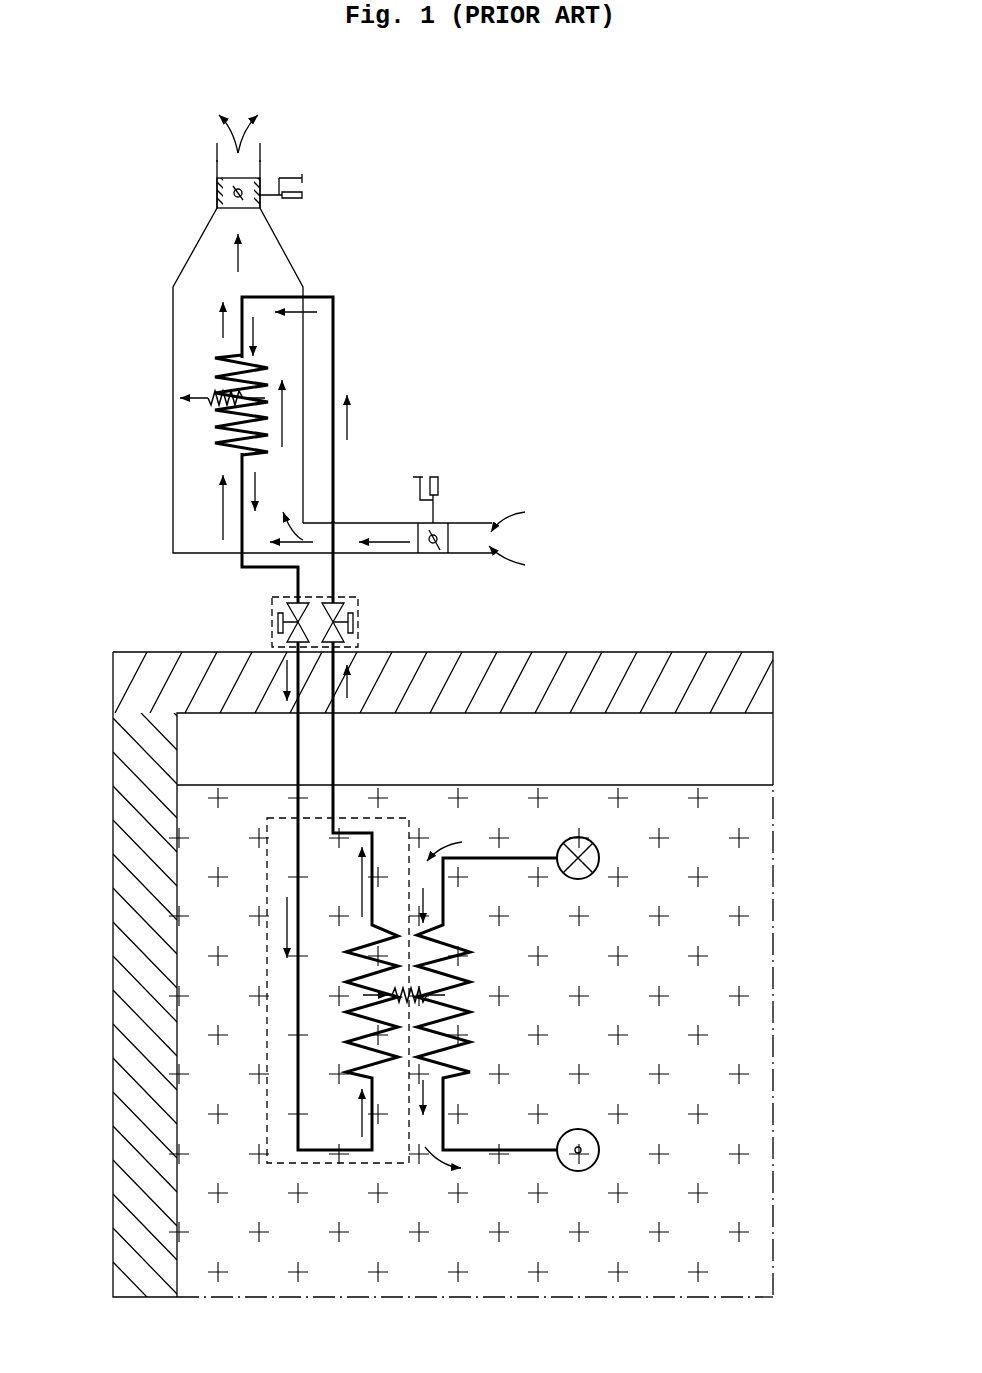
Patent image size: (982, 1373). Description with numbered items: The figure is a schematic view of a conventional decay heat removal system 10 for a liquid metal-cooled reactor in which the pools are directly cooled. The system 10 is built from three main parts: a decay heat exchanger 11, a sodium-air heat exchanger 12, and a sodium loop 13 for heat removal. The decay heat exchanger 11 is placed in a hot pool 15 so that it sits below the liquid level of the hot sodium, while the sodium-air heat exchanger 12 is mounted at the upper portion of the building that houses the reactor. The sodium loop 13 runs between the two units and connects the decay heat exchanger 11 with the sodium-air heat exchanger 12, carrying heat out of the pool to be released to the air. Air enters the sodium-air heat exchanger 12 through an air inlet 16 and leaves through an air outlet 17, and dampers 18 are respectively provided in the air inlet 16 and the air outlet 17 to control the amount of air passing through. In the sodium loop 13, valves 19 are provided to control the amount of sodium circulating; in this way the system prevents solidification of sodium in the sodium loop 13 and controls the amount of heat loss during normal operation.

The decay heat removal system 10 is at (724, 140).
The decay heat exchanger 11 is at (262, 1069).
The sodium-air heat exchanger 12 is at (287, 252).
The sodium loop 13 is at (293, 585).
The hot pool 15 is at (717, 1018).
The air inlet 16 is at (470, 523).
The air outlet 17 is at (260, 152).
The dampers 18 is at (256, 182).
The valves 19 is at (270, 628).